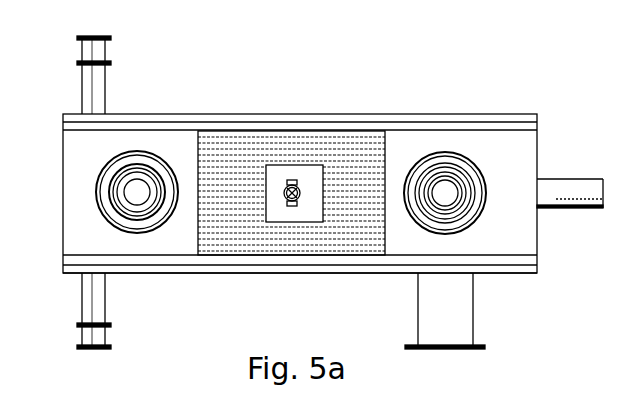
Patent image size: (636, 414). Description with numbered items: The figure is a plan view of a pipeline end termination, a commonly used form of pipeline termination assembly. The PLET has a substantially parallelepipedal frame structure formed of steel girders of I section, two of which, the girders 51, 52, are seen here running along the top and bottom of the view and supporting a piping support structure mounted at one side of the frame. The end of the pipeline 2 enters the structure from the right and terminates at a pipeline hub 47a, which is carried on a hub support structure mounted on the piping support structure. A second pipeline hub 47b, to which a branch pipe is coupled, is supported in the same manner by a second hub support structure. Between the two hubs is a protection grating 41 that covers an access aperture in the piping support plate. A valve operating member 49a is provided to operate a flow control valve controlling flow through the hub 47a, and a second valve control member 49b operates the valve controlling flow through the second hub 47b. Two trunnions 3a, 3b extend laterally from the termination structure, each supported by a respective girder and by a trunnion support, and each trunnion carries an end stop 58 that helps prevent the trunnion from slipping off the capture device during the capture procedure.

The pipeline 2 is at (577, 179).
The trunnion 3a is at (105, 305).
The trunnion 3b is at (105, 92).
The protection grating 41 is at (238, 254).
The pipeline hub 47a is at (155, 170).
The second pipeline hub 47b is at (450, 170).
The valve operating member 49a is at (301, 187).
The second valve control member 49b is at (455, 351).
The steel girder 51 is at (525, 273).
The steel girder 52 is at (485, 114).
The end stop 58 is at (108, 47).